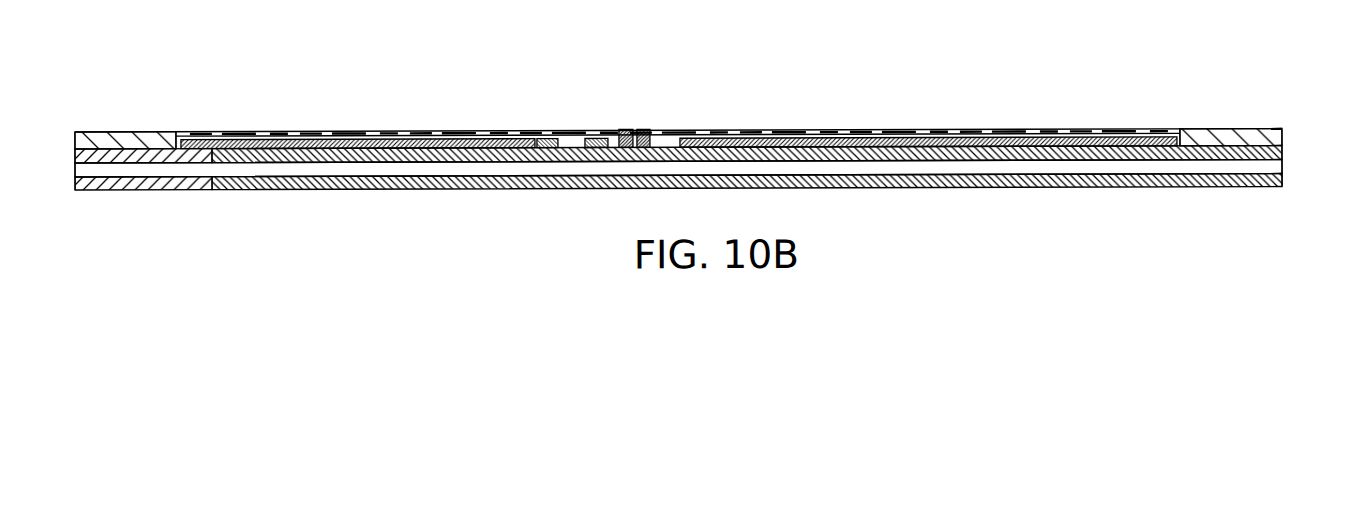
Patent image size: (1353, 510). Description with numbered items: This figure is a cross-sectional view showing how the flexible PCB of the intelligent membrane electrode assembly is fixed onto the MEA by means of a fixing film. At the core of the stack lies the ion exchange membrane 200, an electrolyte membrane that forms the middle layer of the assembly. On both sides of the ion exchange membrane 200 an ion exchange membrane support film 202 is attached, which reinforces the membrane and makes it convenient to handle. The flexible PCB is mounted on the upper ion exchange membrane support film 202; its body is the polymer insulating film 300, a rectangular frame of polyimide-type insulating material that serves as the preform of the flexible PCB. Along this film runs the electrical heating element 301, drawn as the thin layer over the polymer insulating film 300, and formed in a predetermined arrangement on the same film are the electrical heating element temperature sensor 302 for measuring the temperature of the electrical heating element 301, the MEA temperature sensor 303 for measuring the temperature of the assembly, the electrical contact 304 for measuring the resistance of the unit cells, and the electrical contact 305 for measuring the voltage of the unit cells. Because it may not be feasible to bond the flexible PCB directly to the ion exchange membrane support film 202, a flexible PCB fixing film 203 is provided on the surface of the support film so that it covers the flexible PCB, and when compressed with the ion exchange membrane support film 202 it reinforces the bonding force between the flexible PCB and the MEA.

The ion exchange membrane 200 is at (1283, 170).
The ion exchange membrane support film 202 is at (1283, 151).
The flexible PCB fixing film 203 is at (1243, 132).
The polymer insulating film 300 is at (1187, 133).
The electrical heating element 301 is at (843, 139).
The electrical heating element temperature sensor 302 is at (538, 140).
The MEA temperature sensor 303 is at (585, 140).
The electrical contact for measuring resistance 304 is at (644, 131).
The electrical contact for measuring voltage 305 is at (622, 131).